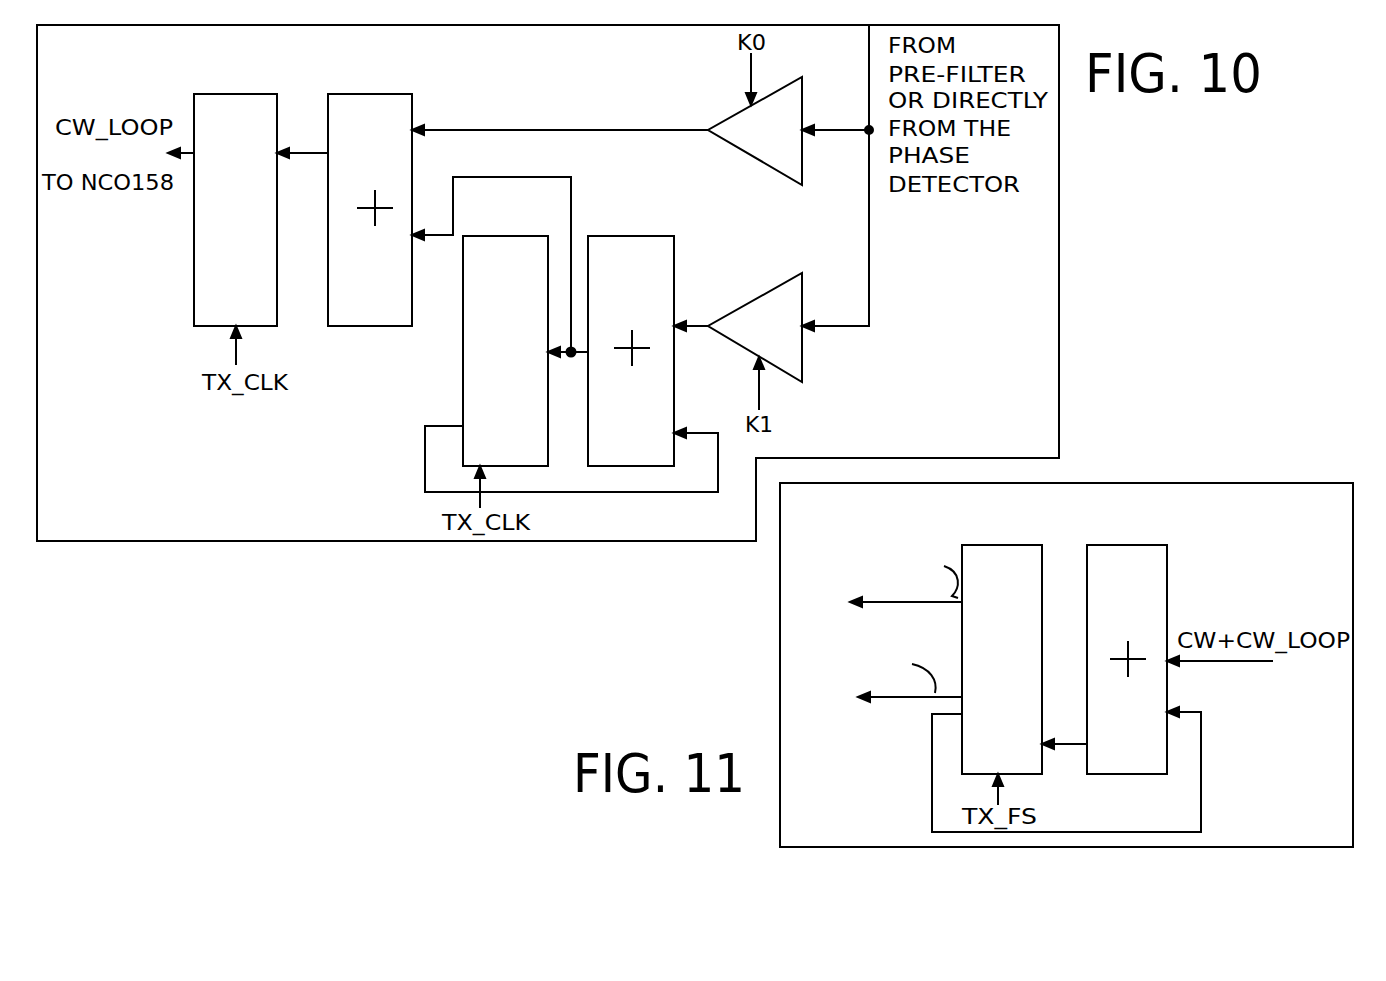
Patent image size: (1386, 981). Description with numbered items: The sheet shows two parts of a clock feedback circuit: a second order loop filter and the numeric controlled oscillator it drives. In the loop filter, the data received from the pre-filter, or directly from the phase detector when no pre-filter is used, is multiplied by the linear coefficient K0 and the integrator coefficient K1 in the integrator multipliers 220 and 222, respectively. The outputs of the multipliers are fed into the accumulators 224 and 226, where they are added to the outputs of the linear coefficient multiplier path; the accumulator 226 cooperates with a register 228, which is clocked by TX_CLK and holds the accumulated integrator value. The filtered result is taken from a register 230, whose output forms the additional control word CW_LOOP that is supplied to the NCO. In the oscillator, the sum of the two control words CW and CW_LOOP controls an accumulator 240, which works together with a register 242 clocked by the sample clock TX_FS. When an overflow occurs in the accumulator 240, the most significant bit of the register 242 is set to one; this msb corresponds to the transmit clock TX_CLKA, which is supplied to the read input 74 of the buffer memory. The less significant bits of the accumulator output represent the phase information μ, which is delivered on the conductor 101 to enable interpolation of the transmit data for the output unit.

In FIG. 10, the integrator multiplier 220 is at (725, 120).
In FIG. 10, the integrator multiplier 222 is at (747, 303).
In FIG. 10, the accumulator 224 is at (375, 94).
In FIG. 10, the accumulator 226 is at (608, 236).
In FIG. 10, the register 228 is at (488, 236).
In FIG. 10, the register 230 is at (243, 94).
In FIG. 11, the accumulator 240 is at (1155, 545).
In FIG. 11, the register 242 is at (1035, 545).
In FIG. 11, the read input 74 is at (907, 605).
In FIG. 11, the conductor 101 is at (913, 698).